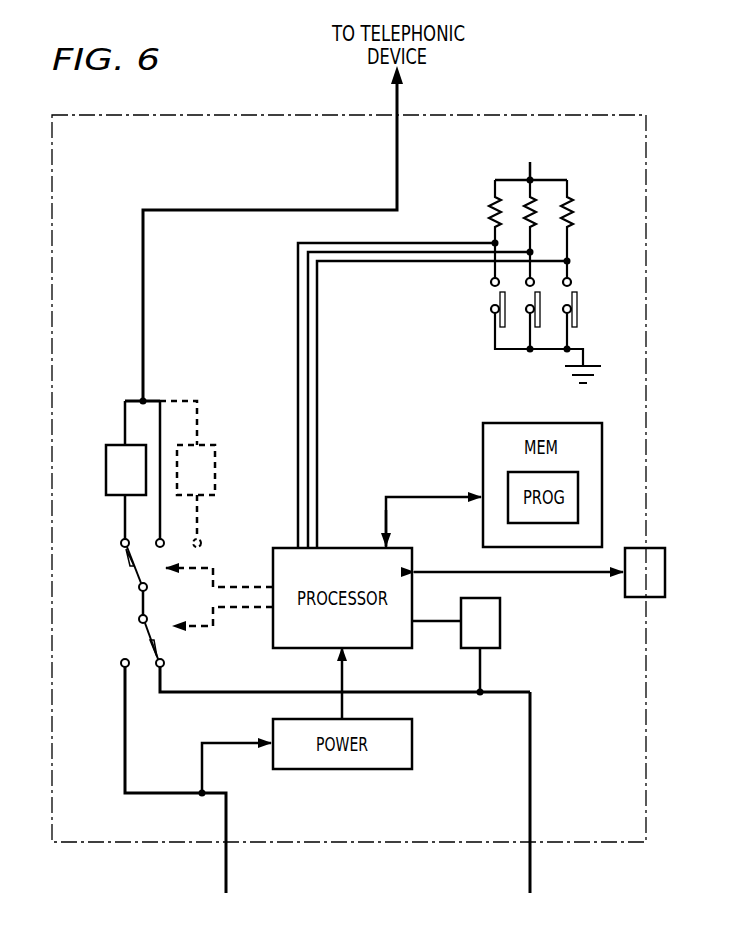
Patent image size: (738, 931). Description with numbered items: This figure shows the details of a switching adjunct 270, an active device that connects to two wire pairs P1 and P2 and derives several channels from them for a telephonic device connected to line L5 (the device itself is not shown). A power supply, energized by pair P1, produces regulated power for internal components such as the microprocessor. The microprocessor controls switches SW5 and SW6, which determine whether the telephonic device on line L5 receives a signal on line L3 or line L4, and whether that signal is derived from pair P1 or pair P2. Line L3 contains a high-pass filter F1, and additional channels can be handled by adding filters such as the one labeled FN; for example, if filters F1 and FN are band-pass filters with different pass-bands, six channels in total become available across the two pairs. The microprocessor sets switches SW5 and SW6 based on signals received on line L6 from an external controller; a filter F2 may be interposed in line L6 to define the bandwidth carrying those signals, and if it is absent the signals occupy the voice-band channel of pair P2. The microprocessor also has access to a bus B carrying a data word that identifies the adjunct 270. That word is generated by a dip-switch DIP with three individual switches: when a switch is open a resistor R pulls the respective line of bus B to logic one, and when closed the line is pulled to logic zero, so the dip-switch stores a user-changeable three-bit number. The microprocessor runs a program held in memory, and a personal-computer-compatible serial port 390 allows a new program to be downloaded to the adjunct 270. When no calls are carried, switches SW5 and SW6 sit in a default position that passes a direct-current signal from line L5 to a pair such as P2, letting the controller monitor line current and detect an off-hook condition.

The switching adjunct 270 is at (646, 740).
The line L5 is at (395, 103).
The bus B is at (333, 350).
The resistor R is at (480, 208).
The dip-switch DIP is at (586, 309).
The line L3 is at (125, 425).
The line L4 is at (162, 423).
The line L6 is at (430, 628).
The high-pass filter F1 is at (126, 470).
The filter FN is at (196, 470).
The filter F2 is at (480, 645).
The switch SW5 is at (128, 582).
The switch SW6 is at (132, 635).
The serial port 390 is at (665, 575).
The pair P1 is at (226, 871).
The pair P2 is at (530, 873).